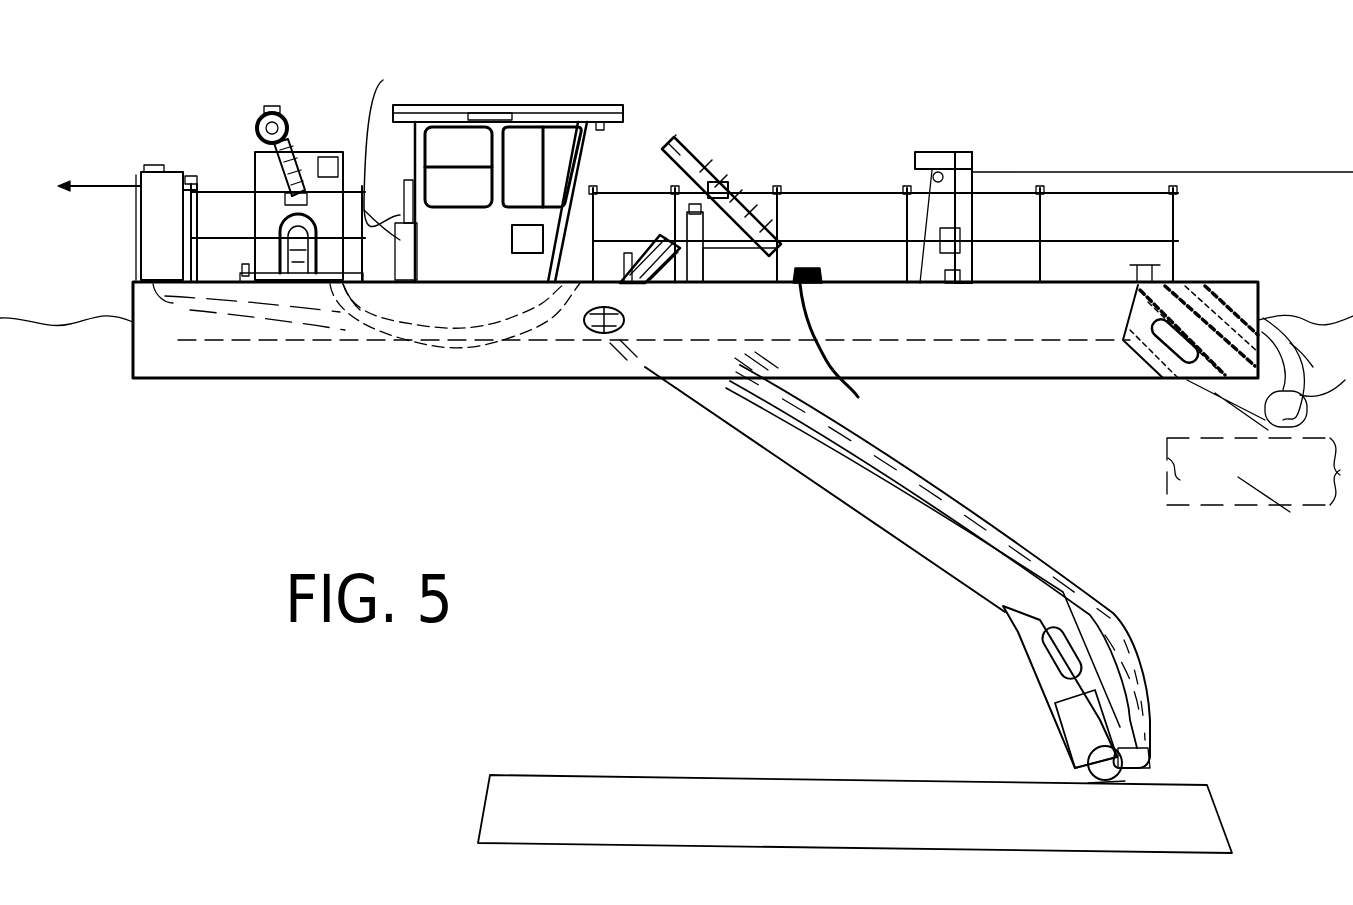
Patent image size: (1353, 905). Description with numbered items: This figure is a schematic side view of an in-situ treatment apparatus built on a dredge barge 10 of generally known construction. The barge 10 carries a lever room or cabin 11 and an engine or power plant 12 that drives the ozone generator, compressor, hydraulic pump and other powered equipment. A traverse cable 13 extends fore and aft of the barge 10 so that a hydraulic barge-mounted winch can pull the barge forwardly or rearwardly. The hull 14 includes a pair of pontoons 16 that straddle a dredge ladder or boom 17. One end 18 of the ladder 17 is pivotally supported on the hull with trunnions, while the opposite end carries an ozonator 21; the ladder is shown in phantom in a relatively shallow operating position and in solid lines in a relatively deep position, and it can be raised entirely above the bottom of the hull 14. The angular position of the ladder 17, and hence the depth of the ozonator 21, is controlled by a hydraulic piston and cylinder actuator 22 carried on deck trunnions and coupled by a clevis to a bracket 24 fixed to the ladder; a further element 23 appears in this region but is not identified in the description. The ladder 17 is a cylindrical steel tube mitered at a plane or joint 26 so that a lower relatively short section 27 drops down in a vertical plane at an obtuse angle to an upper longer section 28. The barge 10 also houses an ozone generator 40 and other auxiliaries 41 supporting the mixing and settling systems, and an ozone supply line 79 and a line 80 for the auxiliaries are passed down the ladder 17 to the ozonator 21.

The dredge barge 10 is at (756, 192).
The lever room or cabin 11 is at (523, 103).
The engine or power plant 12 is at (323, 153).
The traverse cable 13 is at (88, 186).
The hull 14 is at (273, 378).
The pontoons 16 is at (1046, 375).
The dredge ladder or boom 17 is at (818, 492).
The end of the ladder 18 is at (590, 331).
The ozonator 21 is at (550, 807).
The hydraulic piston and cylinder actuator 22 is at (688, 187).
The pipe bracket 23 is at (718, 190).
The bracket 24 is at (849, 354).
The plane or joint 26 is at (1010, 610).
The lower relatively short section 27 is at (1033, 672).
The upper longer section 28 is at (947, 578).
The ozone generator 40 is at (203, 177).
The auxiliaries 41 is at (383, 80).
The ozone supply line 79 is at (252, 305).
The line 80 is at (545, 296).